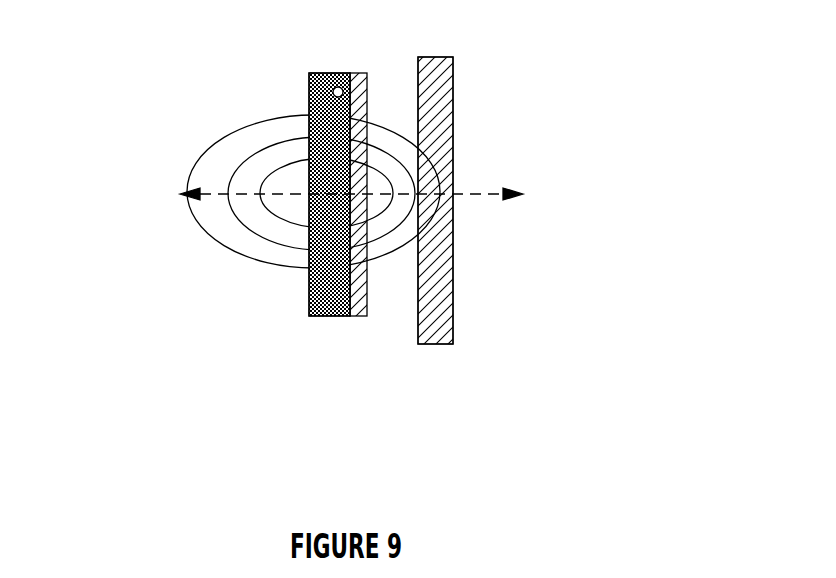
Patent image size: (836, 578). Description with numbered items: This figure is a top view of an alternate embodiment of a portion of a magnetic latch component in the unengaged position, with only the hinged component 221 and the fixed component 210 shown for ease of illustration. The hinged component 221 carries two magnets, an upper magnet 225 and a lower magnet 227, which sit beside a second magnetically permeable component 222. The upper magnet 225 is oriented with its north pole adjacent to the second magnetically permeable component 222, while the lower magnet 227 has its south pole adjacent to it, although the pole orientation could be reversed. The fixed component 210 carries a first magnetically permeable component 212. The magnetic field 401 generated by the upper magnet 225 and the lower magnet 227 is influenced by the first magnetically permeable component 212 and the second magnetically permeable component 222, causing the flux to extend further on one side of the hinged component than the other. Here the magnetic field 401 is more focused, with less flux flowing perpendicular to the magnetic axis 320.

The fixed component 210 is at (453, 72).
The first magnetically permeable component 212 is at (430, 123).
The hinged component 221 is at (347, 316).
The second magnetically permeable component 222 is at (357, 292).
The upper magnet 225 is at (332, 176).
The lower magnet 227 is at (333, 301).
The magnetic axis 320 is at (483, 198).
The magnetic field 401 is at (174, 167).